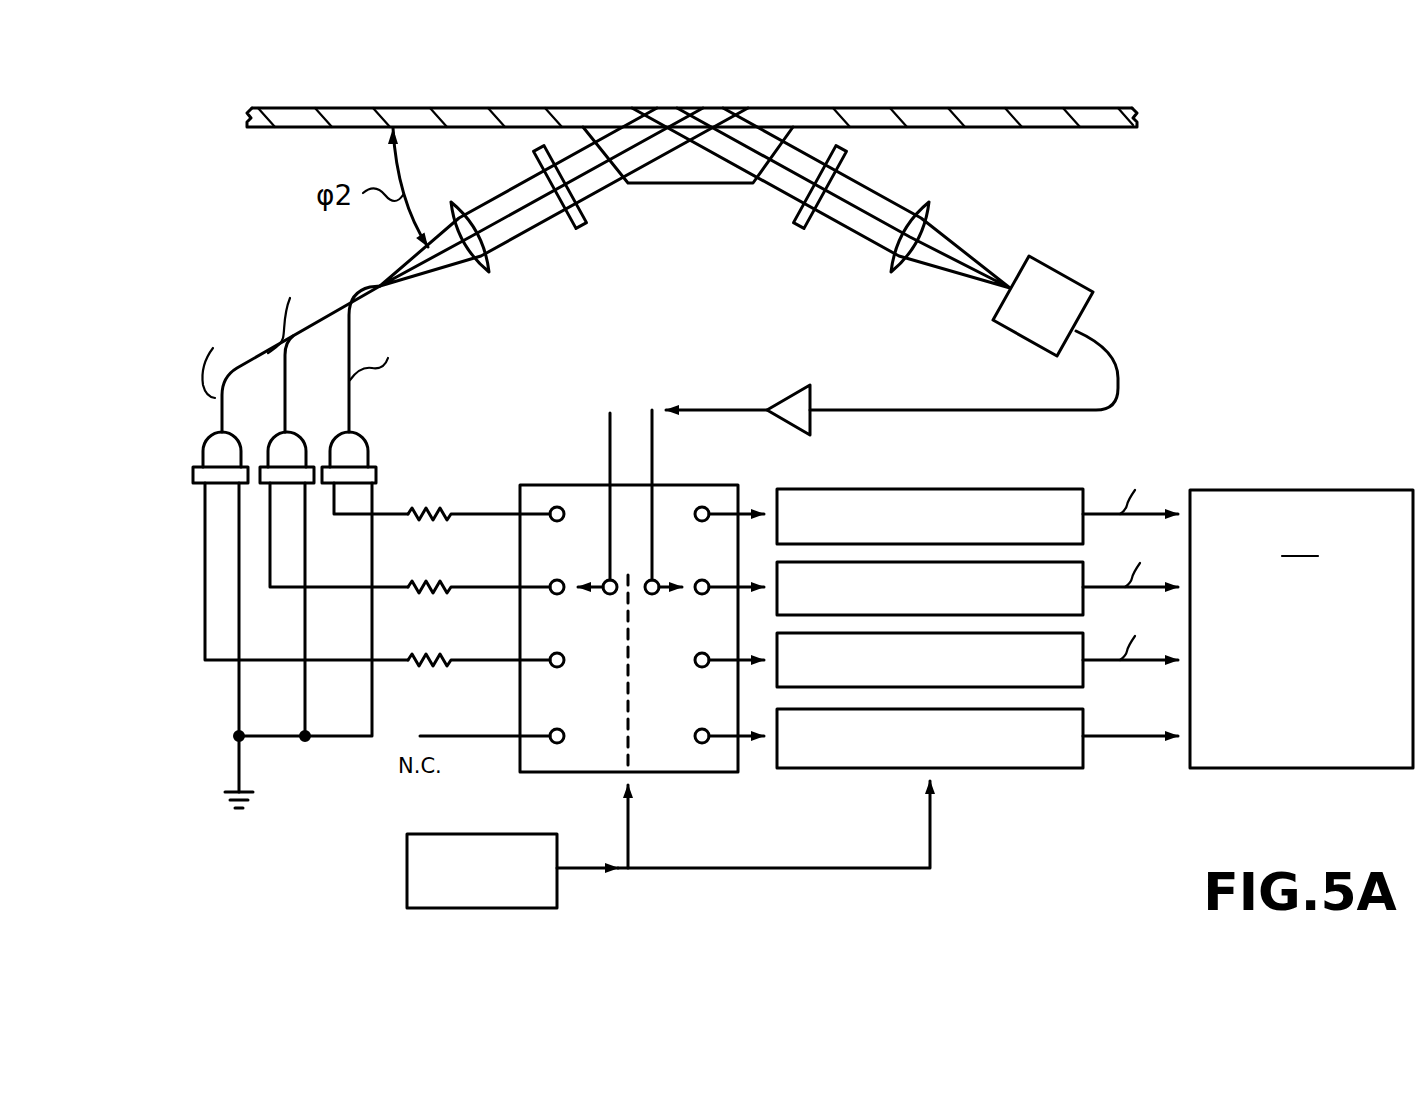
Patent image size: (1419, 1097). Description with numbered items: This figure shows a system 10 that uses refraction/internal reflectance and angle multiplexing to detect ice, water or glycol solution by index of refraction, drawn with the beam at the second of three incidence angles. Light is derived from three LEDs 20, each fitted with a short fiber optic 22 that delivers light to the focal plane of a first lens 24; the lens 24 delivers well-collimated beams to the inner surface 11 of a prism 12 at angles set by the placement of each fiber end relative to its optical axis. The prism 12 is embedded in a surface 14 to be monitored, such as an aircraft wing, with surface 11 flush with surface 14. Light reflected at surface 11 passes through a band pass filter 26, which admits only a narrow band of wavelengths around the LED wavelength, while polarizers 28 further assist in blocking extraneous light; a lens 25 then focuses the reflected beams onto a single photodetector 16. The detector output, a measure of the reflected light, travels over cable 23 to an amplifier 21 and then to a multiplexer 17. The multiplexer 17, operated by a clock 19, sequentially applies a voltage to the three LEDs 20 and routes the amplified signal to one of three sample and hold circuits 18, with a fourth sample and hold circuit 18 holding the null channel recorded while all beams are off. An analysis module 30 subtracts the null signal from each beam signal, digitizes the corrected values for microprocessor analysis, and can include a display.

The system 10 is at (1075, 824).
The surface 11 is at (757, 107).
The prism 12 is at (718, 186).
The surface 14 is at (1000, 107).
The photodetector 16 is at (1062, 265).
The multiplexer 17 is at (692, 790).
The sample and hold circuits 18 is at (976, 479).
The clock 19 is at (407, 870).
The LEDs 20 is at (408, 446).
The amplifier 21 is at (786, 400).
The fiber optic 22 is at (380, 397).
The cable 23 is at (1122, 368).
The first lens 24 is at (490, 262).
The lens 25 is at (880, 262).
The band pass filter 26 is at (793, 217).
The polarizers 28 is at (587, 218).
The analysis module 30 is at (1301, 629).